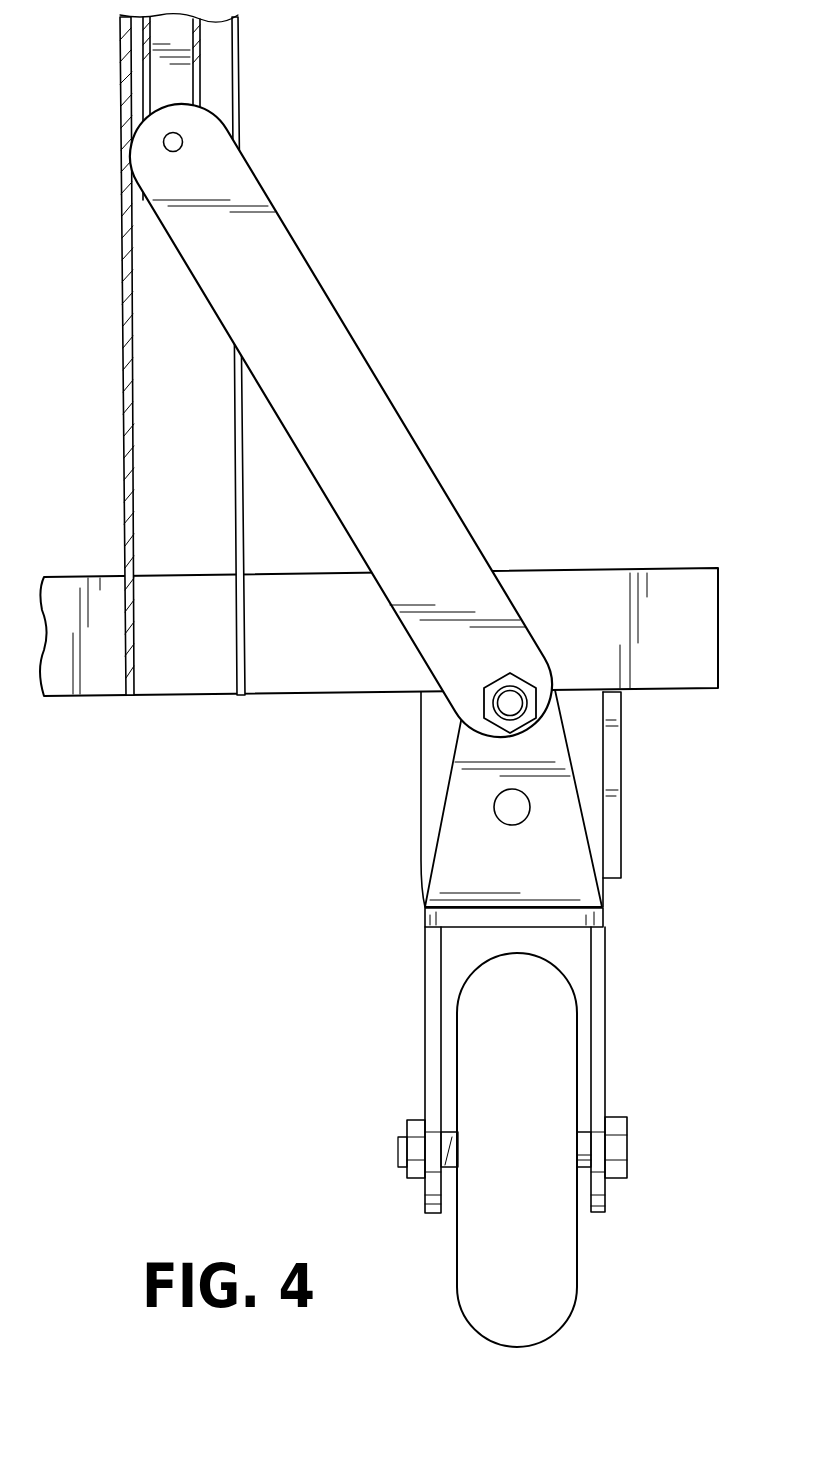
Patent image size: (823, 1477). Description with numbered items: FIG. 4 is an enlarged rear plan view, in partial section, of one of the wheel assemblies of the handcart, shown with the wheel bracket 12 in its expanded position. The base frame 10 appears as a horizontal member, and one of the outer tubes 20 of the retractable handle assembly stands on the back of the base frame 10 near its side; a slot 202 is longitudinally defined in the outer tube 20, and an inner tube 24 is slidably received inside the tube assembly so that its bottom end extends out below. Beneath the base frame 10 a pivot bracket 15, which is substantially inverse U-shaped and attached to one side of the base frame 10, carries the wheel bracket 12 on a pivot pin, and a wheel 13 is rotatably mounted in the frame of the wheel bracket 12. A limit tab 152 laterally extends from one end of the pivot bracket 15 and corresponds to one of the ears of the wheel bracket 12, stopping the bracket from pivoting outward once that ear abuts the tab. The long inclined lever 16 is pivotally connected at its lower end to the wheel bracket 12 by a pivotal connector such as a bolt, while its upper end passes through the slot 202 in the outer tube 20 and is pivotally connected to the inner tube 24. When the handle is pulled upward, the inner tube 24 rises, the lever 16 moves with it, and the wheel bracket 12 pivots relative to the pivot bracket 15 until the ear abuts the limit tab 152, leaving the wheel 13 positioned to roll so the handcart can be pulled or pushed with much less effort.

The base frame 10 is at (590, 592).
The wheel bracket 12 is at (621, 985).
The wheel 13 is at (557, 1063).
The pivot bracket 15 is at (433, 767).
The limit tab 152 is at (613, 788).
The lever 16 is at (345, 358).
The outer tube 20 is at (237, 23).
The inner tube 24 is at (195, 77).
The slot 202 is at (237, 90).